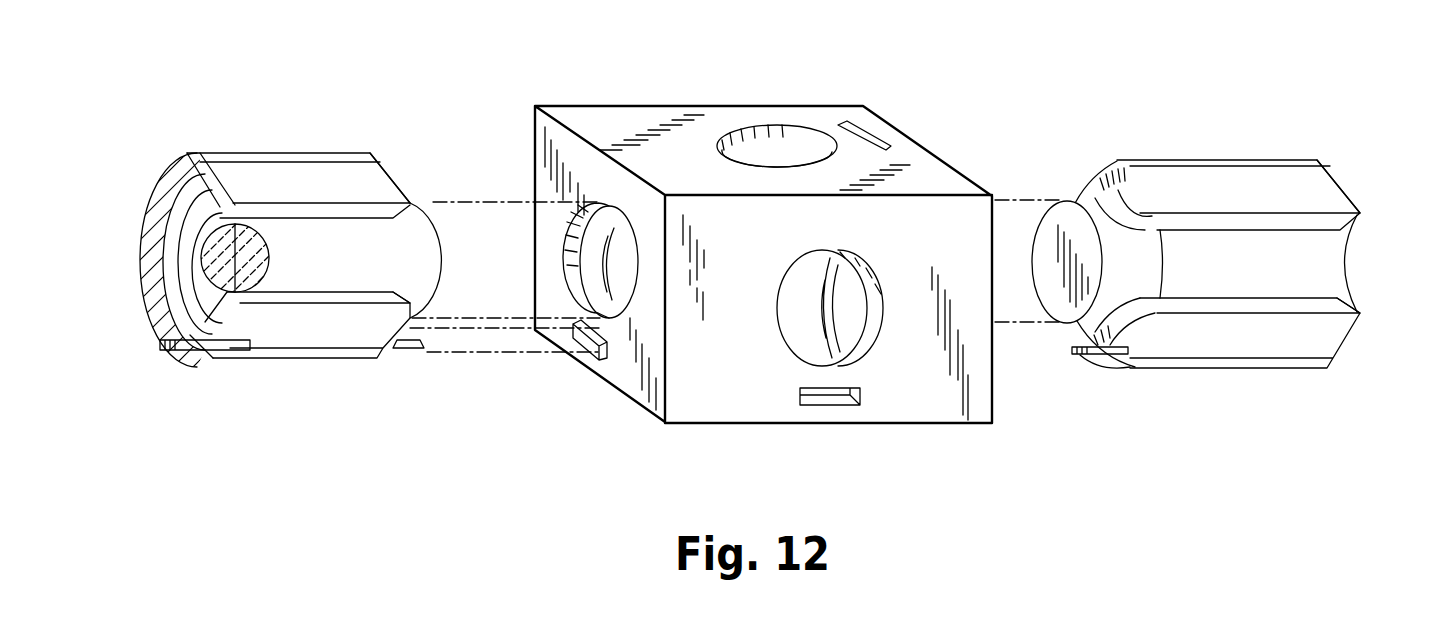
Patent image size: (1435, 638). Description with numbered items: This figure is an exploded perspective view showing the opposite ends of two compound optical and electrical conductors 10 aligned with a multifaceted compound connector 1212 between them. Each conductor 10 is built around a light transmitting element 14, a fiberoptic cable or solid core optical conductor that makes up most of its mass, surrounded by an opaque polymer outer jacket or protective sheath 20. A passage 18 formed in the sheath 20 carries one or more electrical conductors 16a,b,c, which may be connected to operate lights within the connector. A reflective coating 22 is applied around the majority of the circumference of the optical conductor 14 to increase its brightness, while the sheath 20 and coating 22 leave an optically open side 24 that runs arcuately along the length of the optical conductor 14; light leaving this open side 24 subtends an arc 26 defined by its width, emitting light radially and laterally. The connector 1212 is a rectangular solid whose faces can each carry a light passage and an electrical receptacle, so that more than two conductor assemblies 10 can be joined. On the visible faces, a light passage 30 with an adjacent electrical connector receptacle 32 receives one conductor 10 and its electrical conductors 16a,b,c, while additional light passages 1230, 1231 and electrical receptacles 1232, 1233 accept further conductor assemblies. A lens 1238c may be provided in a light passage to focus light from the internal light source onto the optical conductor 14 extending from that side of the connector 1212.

The compound optical and electrical conductor 10 is at (320, 393).
The light transmitting element 14 is at (359, 270).
The electrical conductors 16a,b,c is at (168, 352).
The passage 18 is at (205, 360).
The outer jacket or protective sheath 20 is at (247, 153).
The reflective coating 22 is at (1110, 198).
The optically open side 24 is at (238, 255).
The arc 26 is at (412, 215).
The light passage 30 is at (570, 255).
The electrical connector receptacle 32 is at (582, 340).
The compound connector 1212 is at (951, 440).
The light passage 1230 is at (777, 132).
The light passage 1231 is at (883, 295).
The electrical receptacle 1232 is at (845, 125).
The electrical receptacle 1233 is at (830, 405).
The lens 1238c is at (790, 330).